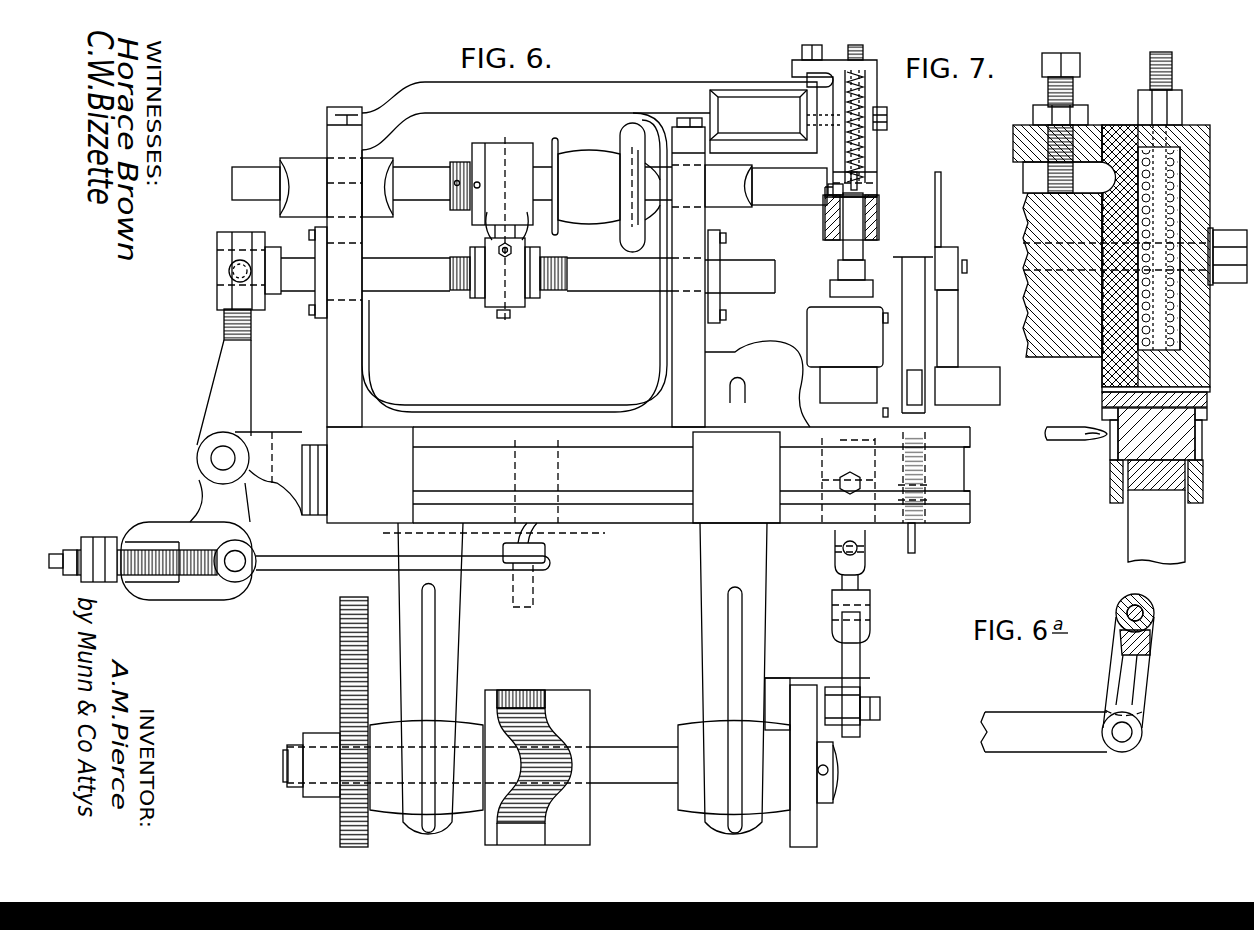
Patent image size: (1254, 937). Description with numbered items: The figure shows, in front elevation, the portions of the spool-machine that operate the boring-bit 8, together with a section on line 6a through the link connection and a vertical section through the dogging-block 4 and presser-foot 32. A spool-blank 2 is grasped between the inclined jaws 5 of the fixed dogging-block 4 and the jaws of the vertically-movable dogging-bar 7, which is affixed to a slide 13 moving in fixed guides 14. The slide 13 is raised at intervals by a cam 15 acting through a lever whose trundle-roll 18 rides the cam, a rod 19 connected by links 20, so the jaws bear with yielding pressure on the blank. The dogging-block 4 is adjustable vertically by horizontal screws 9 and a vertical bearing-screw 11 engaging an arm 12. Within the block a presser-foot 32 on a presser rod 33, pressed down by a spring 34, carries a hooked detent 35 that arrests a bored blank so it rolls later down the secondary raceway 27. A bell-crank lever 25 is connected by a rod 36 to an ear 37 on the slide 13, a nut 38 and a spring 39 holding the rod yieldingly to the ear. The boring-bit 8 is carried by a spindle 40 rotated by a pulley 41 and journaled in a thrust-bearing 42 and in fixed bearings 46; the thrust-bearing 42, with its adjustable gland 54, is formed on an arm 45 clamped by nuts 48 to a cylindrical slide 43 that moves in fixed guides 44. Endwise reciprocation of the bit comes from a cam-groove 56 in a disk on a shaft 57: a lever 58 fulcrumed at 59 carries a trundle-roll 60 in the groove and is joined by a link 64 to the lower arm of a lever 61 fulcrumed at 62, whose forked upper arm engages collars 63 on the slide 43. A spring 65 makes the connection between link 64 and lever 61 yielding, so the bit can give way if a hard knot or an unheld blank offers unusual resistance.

In FIG. 6, the spool-blank 2 is at (825, 216).
In FIG. 7, the spool-blank 2 is at (1207, 413).
In FIG. 6, the dogging-block 4 is at (878, 150).
In FIG. 7, the dogging-block 4 is at (1200, 201).
In FIG. 7, the inclined jaws 5 is at (1108, 417).
In FIG. 6, the dogging-bar 7 is at (847, 248).
In FIG. 7, the dogging-bar 7 is at (1172, 536).
In FIG. 6, the boring-bit 8 is at (828, 190).
In FIG. 7, the boring-bit 8 is at (1075, 442).
In FIG. 6, the horizontal screws 9 is at (887, 114).
In FIG. 7, the horizontal screws 9 is at (1226, 245).
In FIG. 7, the vertical bearing-screw 11 is at (1074, 97).
In FIG. 7, the arm 12 is at (1013, 133).
In FIG. 6, the slide 13 is at (873, 290).
In FIG. 6, the fixed guides 14 is at (503, 147).
In FIG. 6, the cam 15 is at (815, 814).
In FIG. 6, the trundle-roll 18 is at (800, 690).
In FIG. 6, the rod 19 is at (864, 533).
In FIG. 6, the links 20 is at (868, 586).
In FIG. 6, the bell-crank lever 25 is at (913, 325).
In FIG. 6, the secondary raceway 27 is at (880, 225).
In FIG. 6, the presser-foot 32 is at (880, 173).
In FIG. 7, the presser-foot 32 is at (1207, 399).
In FIG. 6, the presser rod 33 is at (866, 48).
In FIG. 7, the presser rod 33 is at (1180, 339).
In FIG. 6, the spring 34 is at (887, 108).
In FIG. 7, the spring 34 is at (1180, 297).
In FIG. 6, the detent 35 is at (850, 172).
In FIG. 6, the rod 36 is at (917, 540).
In FIG. 6, the ear 37 is at (960, 493).
In FIG. 6, the nut 38 is at (866, 550).
In FIG. 6, the spring 39 is at (960, 471).
In FIG. 6, the spindle 40 is at (778, 198).
In FIG. 6, the pulley 41 is at (590, 207).
In FIG. 6, the thrust-bearing 42 is at (525, 158).
In FIG. 6, the cylindrical slide 43 is at (600, 285).
In FIG. 6, the fixed guides 44 is at (366, 298).
In FIG. 6, the arm 45 is at (497, 237).
In FIG. 6, the fixed bearings 46 is at (374, 210).
In FIG. 6, the clamping-nuts 48 is at (478, 300).
In FIG. 6, the adjustable gland 54 is at (462, 162).
In FIG. 6, the cam-groove 56 is at (548, 736).
In FIG. 6, the shaft 57 is at (638, 764).
In FIG. 6, the lever 58 is at (550, 551).
In FIG. 6A, the lever 58 is at (1150, 658).
In FIG. 6, the fulcrum 59 is at (524, 565).
In FIG. 6A, the fulcrum 59 is at (1152, 614).
In FIG. 6, the trundle-roll 60 is at (518, 700).
In FIG. 6, the lever 61 is at (214, 411).
In FIG. 6, the fulcrum 62 is at (211, 461).
In FIG. 6, the collars 63 is at (253, 233).
In FIG. 6, the link 64 is at (315, 573).
In FIG. 6A, the link 64 is at (1027, 742).
In FIG. 6, the spring 65 is at (198, 577).
In FIG. 6, the section line 6a is at (493, 530).